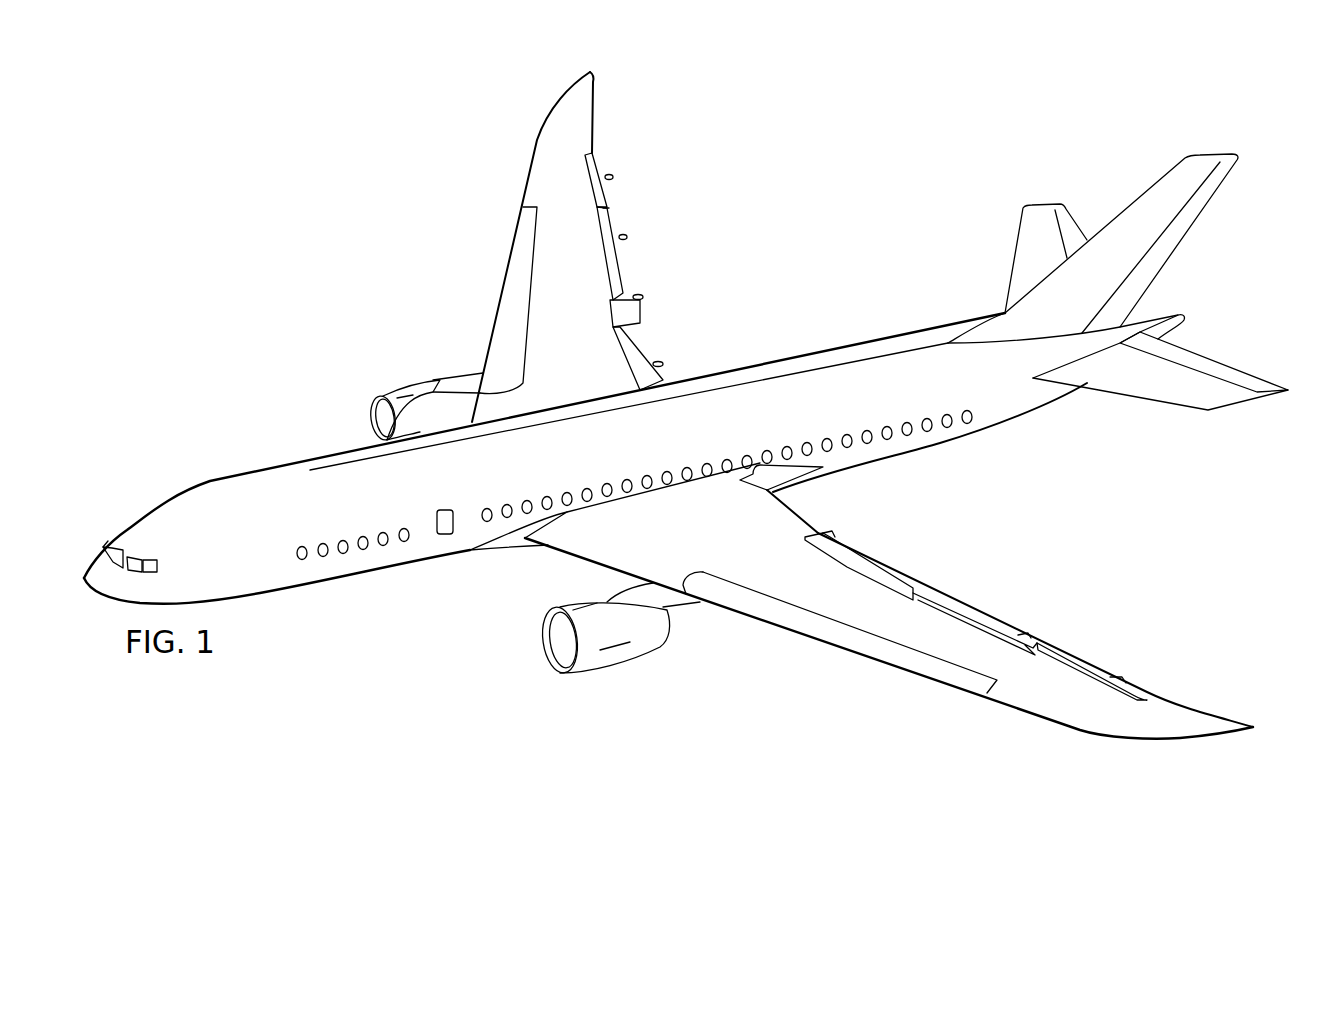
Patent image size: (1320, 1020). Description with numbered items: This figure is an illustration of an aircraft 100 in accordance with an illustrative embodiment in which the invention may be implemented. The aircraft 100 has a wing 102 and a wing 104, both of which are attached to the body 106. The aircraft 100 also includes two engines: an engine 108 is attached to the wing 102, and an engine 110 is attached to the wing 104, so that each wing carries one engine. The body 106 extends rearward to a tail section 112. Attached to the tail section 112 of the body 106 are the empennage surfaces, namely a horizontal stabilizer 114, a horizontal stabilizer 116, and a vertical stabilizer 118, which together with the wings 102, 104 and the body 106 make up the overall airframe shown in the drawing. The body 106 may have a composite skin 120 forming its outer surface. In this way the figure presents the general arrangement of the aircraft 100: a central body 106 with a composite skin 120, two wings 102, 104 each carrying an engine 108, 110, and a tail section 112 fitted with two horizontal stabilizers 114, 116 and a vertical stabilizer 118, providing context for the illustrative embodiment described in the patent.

The aircraft 100 is at (358, 293).
The wing 102 is at (588, 104).
The wing 104 is at (1115, 737).
The body 106 is at (245, 475).
The engine 108 is at (407, 380).
The engine 110 is at (623, 667).
The tail section 112 is at (1075, 437).
The horizontal stabilizer 114 is at (1013, 258).
The horizontal stabilizer 116 is at (1163, 400).
The vertical stabilizer 118 is at (1187, 233).
The composite skin 120 is at (777, 362).